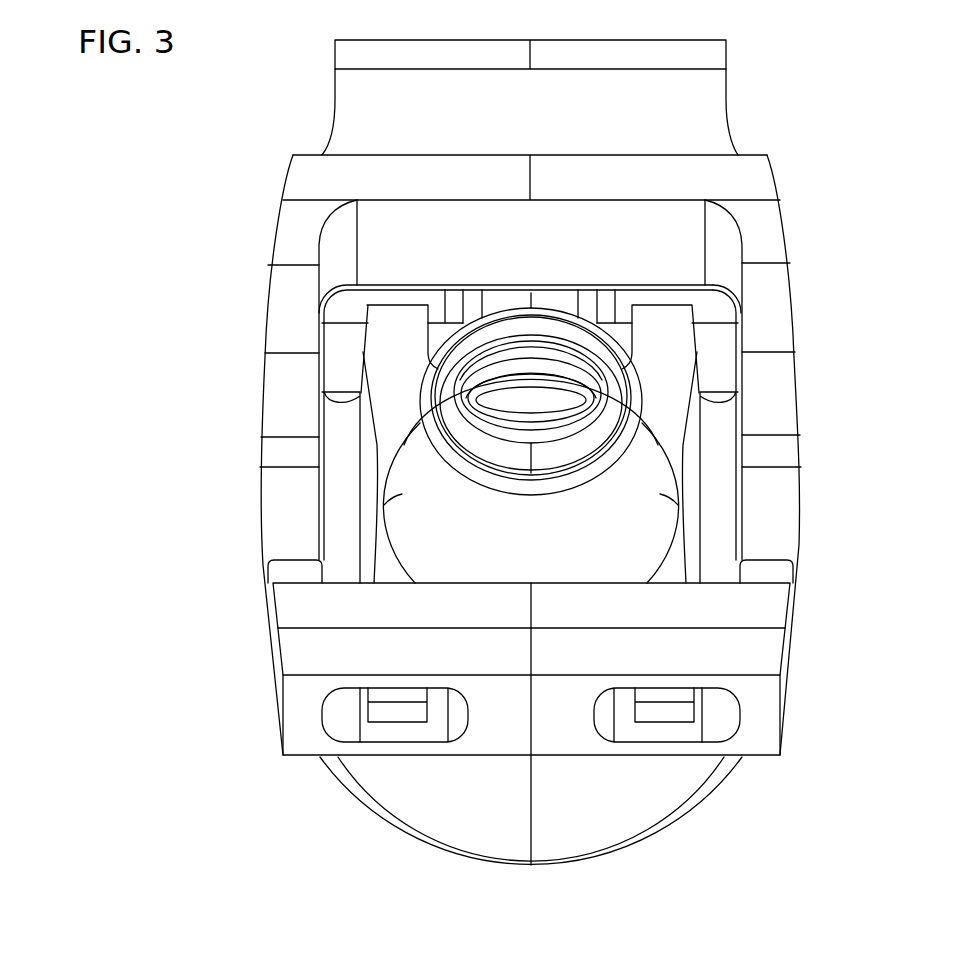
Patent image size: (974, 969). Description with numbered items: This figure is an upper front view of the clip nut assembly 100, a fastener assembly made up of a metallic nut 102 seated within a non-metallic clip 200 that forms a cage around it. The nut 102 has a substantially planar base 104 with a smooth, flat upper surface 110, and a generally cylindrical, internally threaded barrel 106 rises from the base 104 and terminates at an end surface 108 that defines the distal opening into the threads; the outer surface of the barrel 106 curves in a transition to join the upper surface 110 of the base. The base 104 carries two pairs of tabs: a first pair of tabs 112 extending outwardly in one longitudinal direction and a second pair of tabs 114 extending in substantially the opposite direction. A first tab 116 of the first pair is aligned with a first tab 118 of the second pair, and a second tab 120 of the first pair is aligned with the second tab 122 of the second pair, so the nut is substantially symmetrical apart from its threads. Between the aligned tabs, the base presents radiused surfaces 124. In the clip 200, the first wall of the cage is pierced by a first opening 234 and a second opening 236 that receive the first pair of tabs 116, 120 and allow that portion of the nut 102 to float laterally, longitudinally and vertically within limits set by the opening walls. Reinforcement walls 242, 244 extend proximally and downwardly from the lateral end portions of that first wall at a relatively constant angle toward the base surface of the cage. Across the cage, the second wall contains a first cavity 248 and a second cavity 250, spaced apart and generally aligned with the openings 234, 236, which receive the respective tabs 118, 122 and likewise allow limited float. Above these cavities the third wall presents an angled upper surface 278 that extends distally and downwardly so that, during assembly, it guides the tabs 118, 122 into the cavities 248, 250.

The clip nut assembly 100 is at (213, 148).
The clip 200 is at (817, 150).
The upper surface 278 is at (395, 238).
The first cavity 248 is at (333, 301).
The second cavity 250 is at (721, 303).
The first tab 118 is at (395, 330).
The second pair of tabs 114 is at (350, 351).
The second tab 122 is at (672, 322).
The radiused surfaces 124 is at (370, 448).
The base 104 is at (673, 381).
The end surface 108 is at (630, 432).
The nut 102 is at (418, 526).
The barrel 106 is at (607, 493).
The upper surface 110 is at (673, 560).
The reinforcement wall 242 is at (290, 572).
The reinforcement wall 244 is at (770, 570).
The first opening 234 is at (340, 720).
The second opening 236 is at (715, 728).
The first pair of tabs 112 is at (398, 741).
The second tab 120 is at (653, 712).
The first tab 116 is at (358, 762).